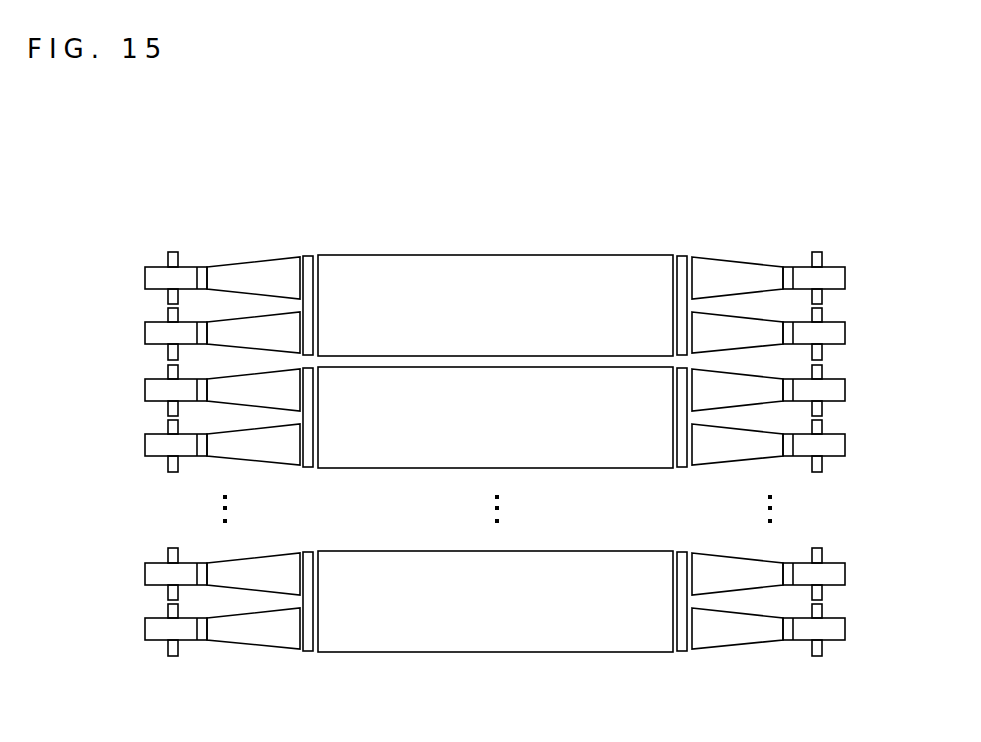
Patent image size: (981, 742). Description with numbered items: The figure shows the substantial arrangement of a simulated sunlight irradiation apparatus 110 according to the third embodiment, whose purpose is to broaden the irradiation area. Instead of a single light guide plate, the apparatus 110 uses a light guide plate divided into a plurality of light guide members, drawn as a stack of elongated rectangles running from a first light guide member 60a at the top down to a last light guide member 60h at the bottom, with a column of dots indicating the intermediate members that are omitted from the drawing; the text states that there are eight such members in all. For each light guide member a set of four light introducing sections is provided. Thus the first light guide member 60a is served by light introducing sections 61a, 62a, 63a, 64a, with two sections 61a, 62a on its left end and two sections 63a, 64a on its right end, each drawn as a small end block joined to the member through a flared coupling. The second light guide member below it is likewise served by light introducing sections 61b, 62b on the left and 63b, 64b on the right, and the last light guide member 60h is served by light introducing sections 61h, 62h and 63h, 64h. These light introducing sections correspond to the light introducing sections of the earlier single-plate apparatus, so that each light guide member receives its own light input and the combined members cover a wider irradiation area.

The simulated sunlight irradiation apparatus 110 is at (812, 152).
The light guide member 60a is at (495, 255).
The light guide member 60h is at (495, 652).
The light introducing section 61a is at (152, 275).
The light introducing section 62a is at (152, 330).
The light introducing section 63a is at (837, 275).
The light introducing section 64a is at (837, 330).
The light introducing section 61b is at (152, 387).
The light introducing section 62b is at (152, 442).
The light introducing section 63b is at (837, 387).
The light introducing section 64b is at (837, 442).
The light introducing section 61h is at (152, 571).
The light introducing section 62h is at (152, 626).
The light introducing section 63h is at (837, 571).
The light introducing section 64h is at (837, 626).